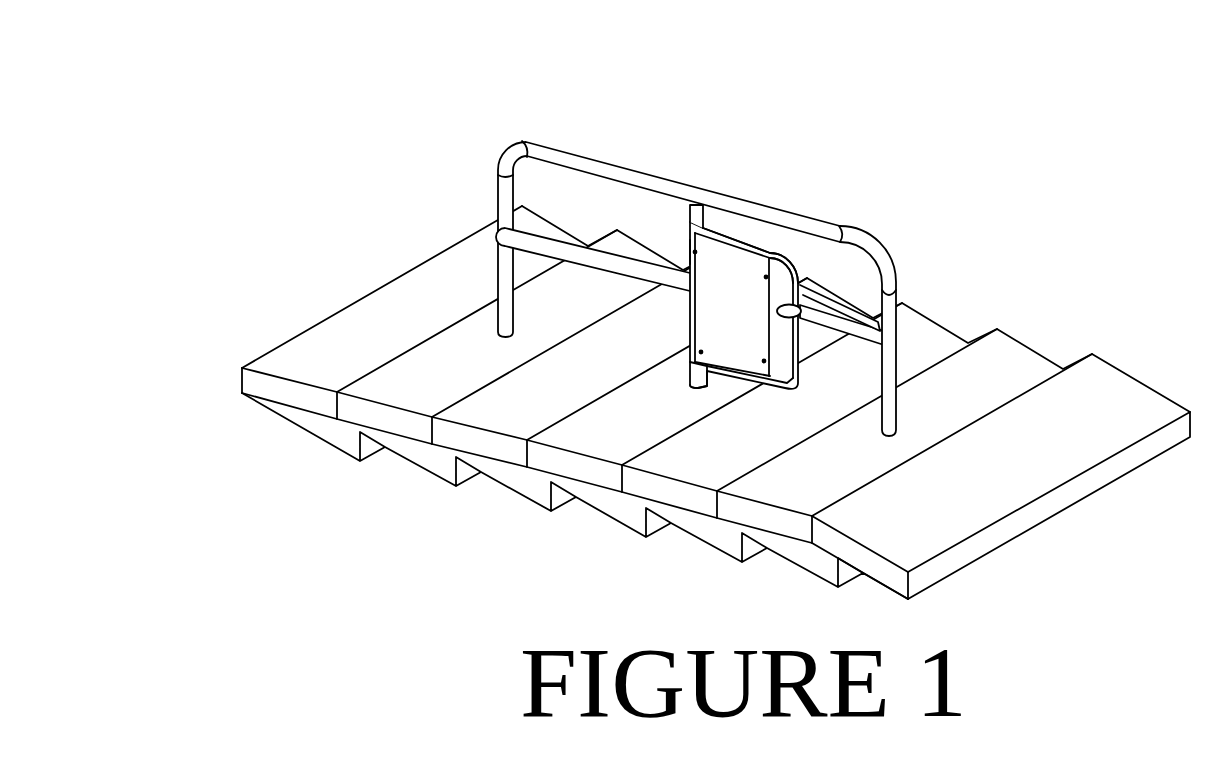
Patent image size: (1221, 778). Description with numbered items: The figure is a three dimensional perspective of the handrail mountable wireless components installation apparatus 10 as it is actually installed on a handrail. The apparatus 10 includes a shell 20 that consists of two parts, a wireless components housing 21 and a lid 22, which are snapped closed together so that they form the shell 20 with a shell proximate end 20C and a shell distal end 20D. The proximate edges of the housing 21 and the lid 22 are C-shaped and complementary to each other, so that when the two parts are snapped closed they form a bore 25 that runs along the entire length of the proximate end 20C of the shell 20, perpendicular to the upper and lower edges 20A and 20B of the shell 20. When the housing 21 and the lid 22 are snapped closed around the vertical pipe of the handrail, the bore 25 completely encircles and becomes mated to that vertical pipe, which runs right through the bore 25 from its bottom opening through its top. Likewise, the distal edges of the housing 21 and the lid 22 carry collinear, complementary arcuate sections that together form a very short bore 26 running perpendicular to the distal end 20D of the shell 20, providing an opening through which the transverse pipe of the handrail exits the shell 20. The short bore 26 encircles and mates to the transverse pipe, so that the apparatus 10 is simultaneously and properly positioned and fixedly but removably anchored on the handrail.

The handrail mountable wireless components installation apparatus 10 is at (746, 218).
The shell 20 is at (727, 313).
The upper edge of the shell 20A is at (766, 236).
The lower edge of the shell 20B is at (733, 368).
The shell proximate end 20C is at (684, 251).
The shell distal end 20D is at (807, 290).
The wireless components housing 21 is at (803, 272).
The lid 22 is at (722, 350).
The bore 25 is at (695, 212).
The short bore 26 is at (802, 315).